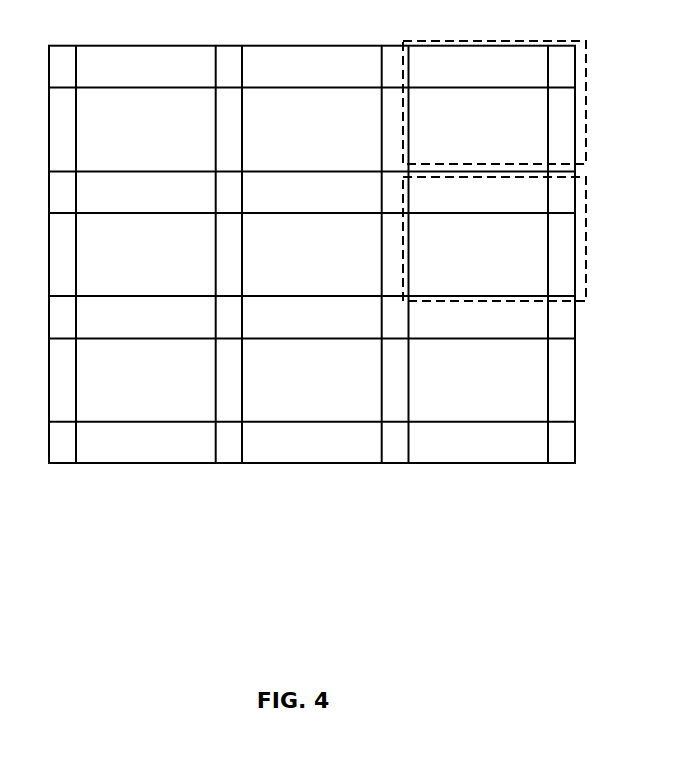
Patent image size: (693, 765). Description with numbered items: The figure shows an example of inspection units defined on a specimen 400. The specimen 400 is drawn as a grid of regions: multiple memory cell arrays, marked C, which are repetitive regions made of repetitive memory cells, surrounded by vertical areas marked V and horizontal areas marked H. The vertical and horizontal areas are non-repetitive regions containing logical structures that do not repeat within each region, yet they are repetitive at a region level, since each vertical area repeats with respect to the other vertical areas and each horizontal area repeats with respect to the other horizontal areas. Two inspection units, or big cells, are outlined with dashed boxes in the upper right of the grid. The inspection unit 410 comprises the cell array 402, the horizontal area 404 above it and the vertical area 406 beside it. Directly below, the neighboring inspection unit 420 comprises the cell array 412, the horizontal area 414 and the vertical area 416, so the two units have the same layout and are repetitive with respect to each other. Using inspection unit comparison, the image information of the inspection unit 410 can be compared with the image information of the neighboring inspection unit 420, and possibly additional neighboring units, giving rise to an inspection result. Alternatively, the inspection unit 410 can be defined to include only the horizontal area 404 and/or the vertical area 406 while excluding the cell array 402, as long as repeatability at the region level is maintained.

The specimen 400 is at (182, 463).
The cell array 402 is at (479, 130).
The horizontal area 404 is at (479, 67).
The vertical area 406 is at (561, 130).
The inspection unit 410 is at (587, 62).
The cell array 412 is at (479, 254).
The horizontal area 414 is at (479, 193).
The vertical area 416 is at (561, 254).
The neighboring inspection unit 420 is at (597, 232).